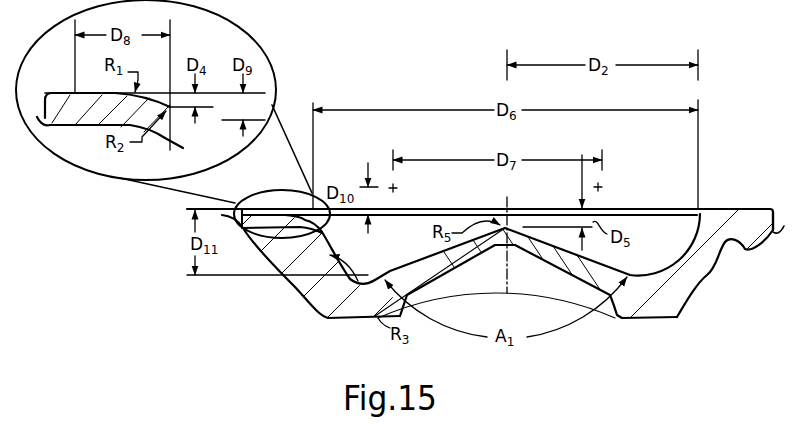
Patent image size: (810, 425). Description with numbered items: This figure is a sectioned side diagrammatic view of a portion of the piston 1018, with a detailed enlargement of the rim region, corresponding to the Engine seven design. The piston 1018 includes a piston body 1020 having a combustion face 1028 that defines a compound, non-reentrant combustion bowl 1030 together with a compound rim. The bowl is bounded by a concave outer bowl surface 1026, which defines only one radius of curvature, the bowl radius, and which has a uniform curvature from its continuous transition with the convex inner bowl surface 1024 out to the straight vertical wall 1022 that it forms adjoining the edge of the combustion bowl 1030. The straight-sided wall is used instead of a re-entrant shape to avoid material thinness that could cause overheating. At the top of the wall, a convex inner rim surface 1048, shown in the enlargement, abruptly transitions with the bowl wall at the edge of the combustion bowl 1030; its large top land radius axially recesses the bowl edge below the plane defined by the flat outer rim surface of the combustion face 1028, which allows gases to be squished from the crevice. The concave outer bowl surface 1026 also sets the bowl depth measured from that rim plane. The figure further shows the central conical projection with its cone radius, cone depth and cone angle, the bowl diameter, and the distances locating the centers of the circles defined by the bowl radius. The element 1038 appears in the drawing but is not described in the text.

The piston 1018 is at (724, 119).
The piston body 1020 is at (751, 247).
The straight vertical wall 1022 is at (318, 215).
The convex inner bowl surface 1024 is at (436, 248).
The concave outer bowl surface 1026 is at (272, 243).
The combustion face 1028 is at (767, 207).
The combustion bowl 1030 is at (670, 258).
The upper surface 1038 is at (732, 205).
The convex inner rim surface 1048 is at (706, 207).